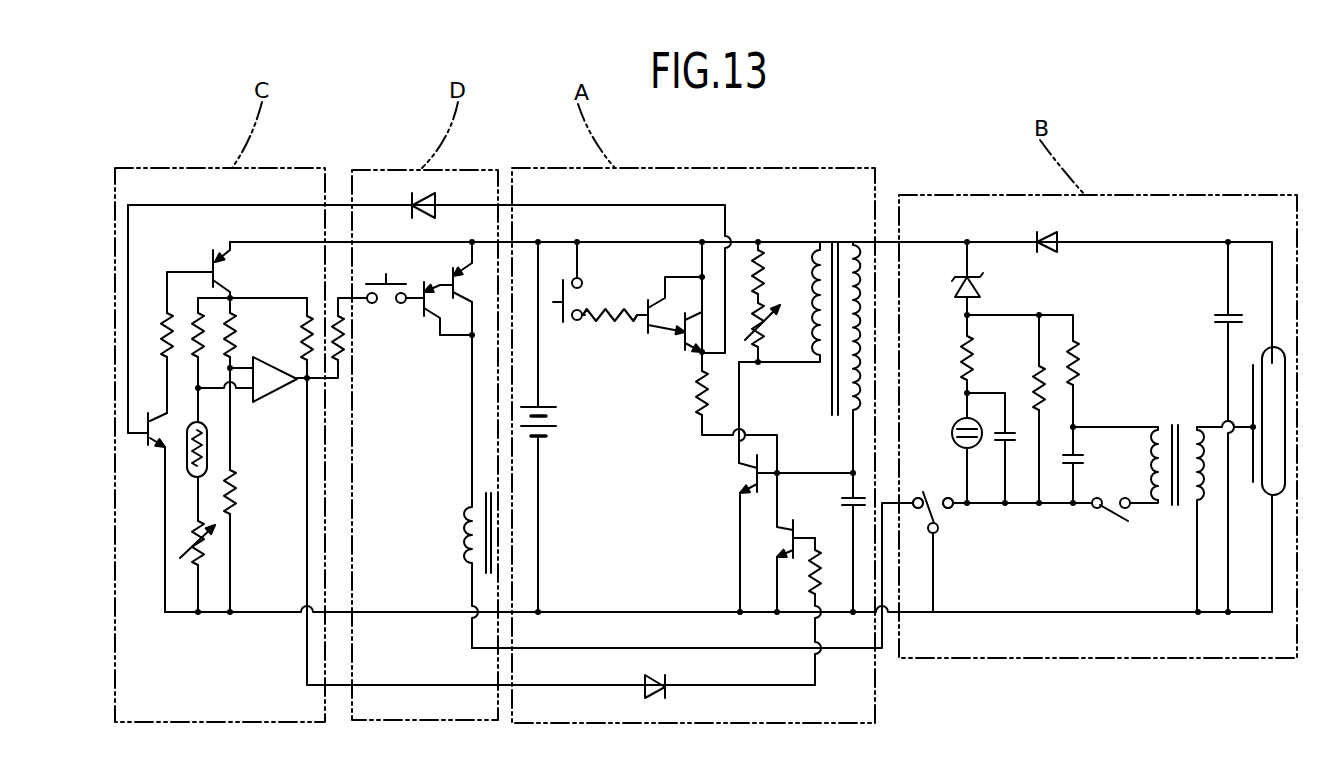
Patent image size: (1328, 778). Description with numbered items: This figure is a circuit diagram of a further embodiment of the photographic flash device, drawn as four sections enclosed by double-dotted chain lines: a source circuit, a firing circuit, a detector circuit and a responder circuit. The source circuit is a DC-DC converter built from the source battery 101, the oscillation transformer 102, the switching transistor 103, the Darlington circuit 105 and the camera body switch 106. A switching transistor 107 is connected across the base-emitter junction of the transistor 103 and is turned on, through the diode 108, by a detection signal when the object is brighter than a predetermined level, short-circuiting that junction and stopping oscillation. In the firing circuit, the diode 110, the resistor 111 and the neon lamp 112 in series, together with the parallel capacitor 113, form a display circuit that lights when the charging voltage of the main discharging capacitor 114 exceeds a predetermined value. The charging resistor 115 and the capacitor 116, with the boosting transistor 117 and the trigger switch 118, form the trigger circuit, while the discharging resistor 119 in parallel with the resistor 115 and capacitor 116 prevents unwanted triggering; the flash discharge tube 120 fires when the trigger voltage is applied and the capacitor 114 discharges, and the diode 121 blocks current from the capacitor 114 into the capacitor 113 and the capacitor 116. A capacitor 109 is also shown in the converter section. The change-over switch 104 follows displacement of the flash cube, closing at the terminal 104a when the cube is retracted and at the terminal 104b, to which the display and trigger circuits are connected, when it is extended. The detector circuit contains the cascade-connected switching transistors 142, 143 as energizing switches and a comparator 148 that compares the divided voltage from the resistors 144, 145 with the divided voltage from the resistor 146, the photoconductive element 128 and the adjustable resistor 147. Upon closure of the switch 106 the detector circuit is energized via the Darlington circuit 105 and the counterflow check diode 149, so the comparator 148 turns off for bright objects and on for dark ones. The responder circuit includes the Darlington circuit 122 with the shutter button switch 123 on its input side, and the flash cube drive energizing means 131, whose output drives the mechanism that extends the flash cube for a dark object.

The source battery 101 is at (548, 432).
The oscillation transformer 102 is at (835, 240).
The switching transistor 103 is at (745, 475).
The change-over switch 104 is at (935, 517).
The terminal 104a is at (918, 497).
The terminal 104b is at (950, 510).
The Darlington circuit 105 is at (672, 322).
The camera body switch 106 is at (558, 318).
The switching transistor 107 is at (780, 537).
The diode 108 is at (645, 690).
The capacitor 109 is at (842, 500).
The diode 110 is at (985, 290).
The resistor 111 is at (960, 355).
The neon lamp 112 is at (955, 425).
The capacitor 113 is at (990, 432).
The main discharging capacitor 114 is at (1215, 318).
The charging resistor 115 is at (1080, 355).
The capacitor 116 is at (1085, 458).
The boosting transistor 117 is at (1172, 425).
The trigger switch 118 is at (1103, 512).
The discharging resistor 119 is at (1035, 385).
The flash discharge tube 120 is at (1270, 478).
The diode 121 is at (1058, 240).
The Darlington circuit 122 is at (440, 305).
The shutter button switch 123 is at (386, 305).
The photoconductive element 128 is at (190, 478).
The flash cube drive energizing means 131 is at (462, 535).
The switching transistor 142 is at (158, 448).
The switching transistor 143 is at (222, 268).
The resistor 144 is at (233, 340).
The resistor 145 is at (240, 492).
The resistor 146 is at (195, 332).
The adjustable resistor 147 is at (207, 565).
The comparator 148 is at (270, 398).
The counterflow check diode 149 is at (433, 197).